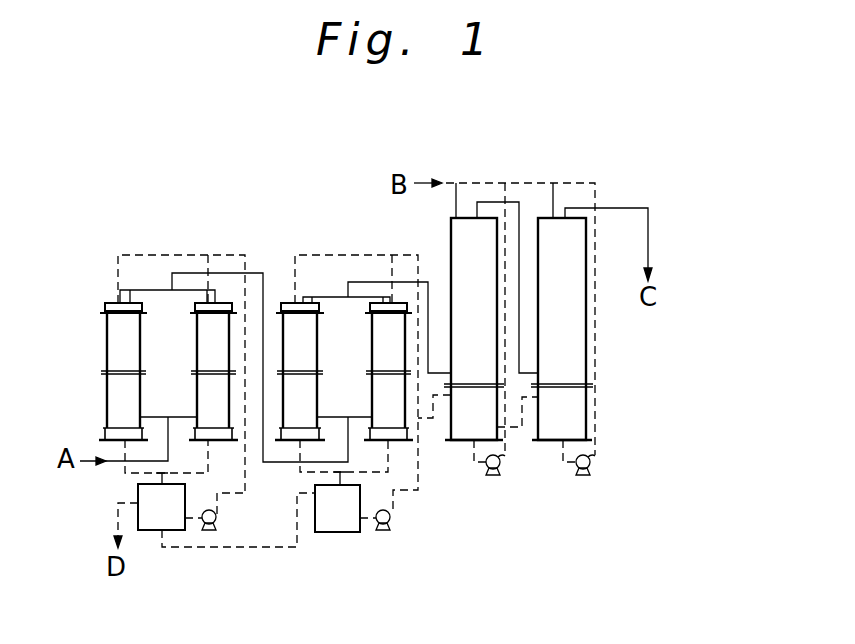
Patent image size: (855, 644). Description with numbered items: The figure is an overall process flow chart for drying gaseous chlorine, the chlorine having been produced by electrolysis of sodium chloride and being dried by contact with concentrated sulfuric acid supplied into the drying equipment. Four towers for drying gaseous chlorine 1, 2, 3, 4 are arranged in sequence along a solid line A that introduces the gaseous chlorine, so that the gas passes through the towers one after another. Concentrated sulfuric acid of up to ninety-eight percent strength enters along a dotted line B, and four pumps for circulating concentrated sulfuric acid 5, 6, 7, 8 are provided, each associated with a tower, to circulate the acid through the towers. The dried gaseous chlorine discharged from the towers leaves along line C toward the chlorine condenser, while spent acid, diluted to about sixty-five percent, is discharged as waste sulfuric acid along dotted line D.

The tower for drying gaseous chlorine 1 is at (133, 302).
The tower for drying gaseous chlorine 2 is at (383, 302).
The tower for drying gaseous chlorine 3 is at (492, 233).
The tower for drying gaseous chlorine 4 is at (584, 236).
The pump for circulating concentrated sulfuric acid 5 is at (216, 518).
The pump for circulating concentrated sulfuric acid 6 is at (390, 519).
The pump for circulating concentrated sulfuric acid 7 is at (500, 466).
The pump for circulating concentrated sulfuric acid 8 is at (590, 466).